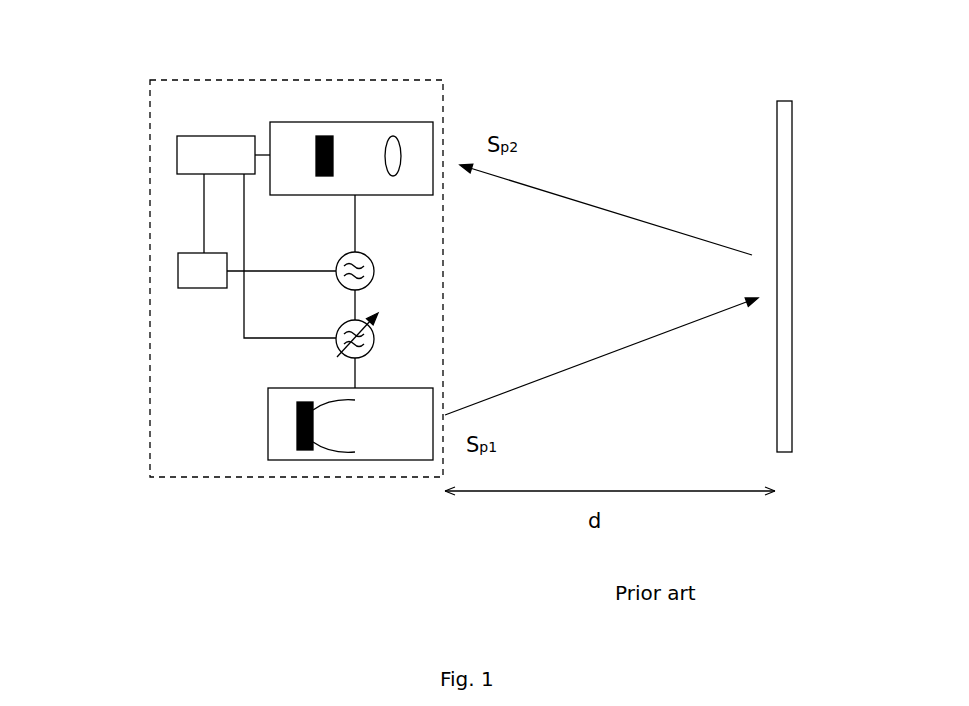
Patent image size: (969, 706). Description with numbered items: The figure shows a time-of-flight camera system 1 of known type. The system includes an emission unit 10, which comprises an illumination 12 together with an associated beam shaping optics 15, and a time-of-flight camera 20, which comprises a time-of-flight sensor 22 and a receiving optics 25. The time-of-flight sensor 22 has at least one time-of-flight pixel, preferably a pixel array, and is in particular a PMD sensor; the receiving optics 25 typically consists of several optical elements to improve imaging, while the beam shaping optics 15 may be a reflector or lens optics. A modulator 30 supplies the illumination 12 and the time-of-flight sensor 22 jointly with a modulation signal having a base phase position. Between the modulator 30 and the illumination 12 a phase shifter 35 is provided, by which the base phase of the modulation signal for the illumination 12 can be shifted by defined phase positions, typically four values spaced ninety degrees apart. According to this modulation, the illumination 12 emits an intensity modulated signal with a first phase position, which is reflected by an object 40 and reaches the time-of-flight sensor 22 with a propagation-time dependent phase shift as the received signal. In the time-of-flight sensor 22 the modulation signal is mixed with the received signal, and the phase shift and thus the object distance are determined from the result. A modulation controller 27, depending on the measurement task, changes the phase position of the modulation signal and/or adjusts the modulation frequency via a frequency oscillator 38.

The time-of-flight camera system 1 is at (98, 88).
The emission unit 10 is at (382, 468).
The illumination 12 is at (292, 448).
The beam shaping optics 15 is at (332, 457).
The time-of-flight camera 20 is at (300, 105).
The time-of-flight sensor 22 is at (313, 157).
The receiving optics 25 is at (392, 130).
The modulation controller 27 is at (192, 146).
The modulator 30 is at (337, 255).
The phase shifter 35 is at (325, 348).
The frequency oscillator 38 is at (192, 272).
The object 40 is at (793, 425).